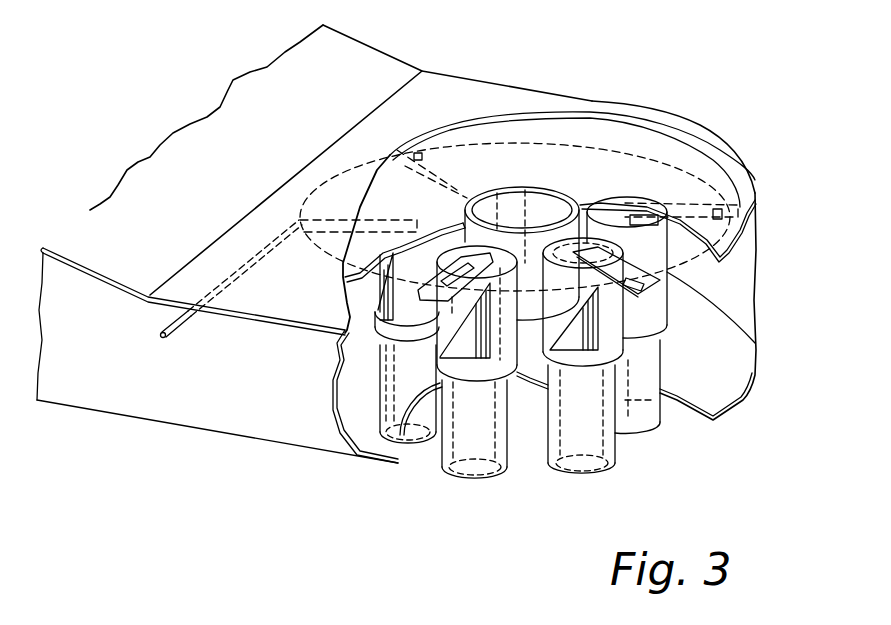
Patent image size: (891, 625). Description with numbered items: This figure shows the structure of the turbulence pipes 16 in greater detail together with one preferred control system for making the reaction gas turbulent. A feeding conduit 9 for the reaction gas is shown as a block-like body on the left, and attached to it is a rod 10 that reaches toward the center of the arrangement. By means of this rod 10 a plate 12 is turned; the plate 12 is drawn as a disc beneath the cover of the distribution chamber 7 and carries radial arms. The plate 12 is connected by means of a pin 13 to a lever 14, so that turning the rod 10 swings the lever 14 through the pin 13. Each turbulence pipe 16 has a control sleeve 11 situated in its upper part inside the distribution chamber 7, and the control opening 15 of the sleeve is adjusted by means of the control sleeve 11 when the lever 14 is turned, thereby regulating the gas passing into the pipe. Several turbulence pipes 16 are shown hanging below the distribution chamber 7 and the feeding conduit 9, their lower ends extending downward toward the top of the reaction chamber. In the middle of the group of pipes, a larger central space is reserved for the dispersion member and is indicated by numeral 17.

The distribution chamber 7 is at (735, 275).
The feeding conduit 9 is at (160, 392).
The rod 10 is at (173, 333).
The control sleeve 11 is at (608, 320).
The plate 12 is at (668, 188).
The pin 13 is at (722, 217).
The lever 14 is at (660, 217).
The control opening 15 is at (578, 334).
The turbulence pipe 16 is at (467, 432).
The space for the dispersion member 17 is at (517, 193).